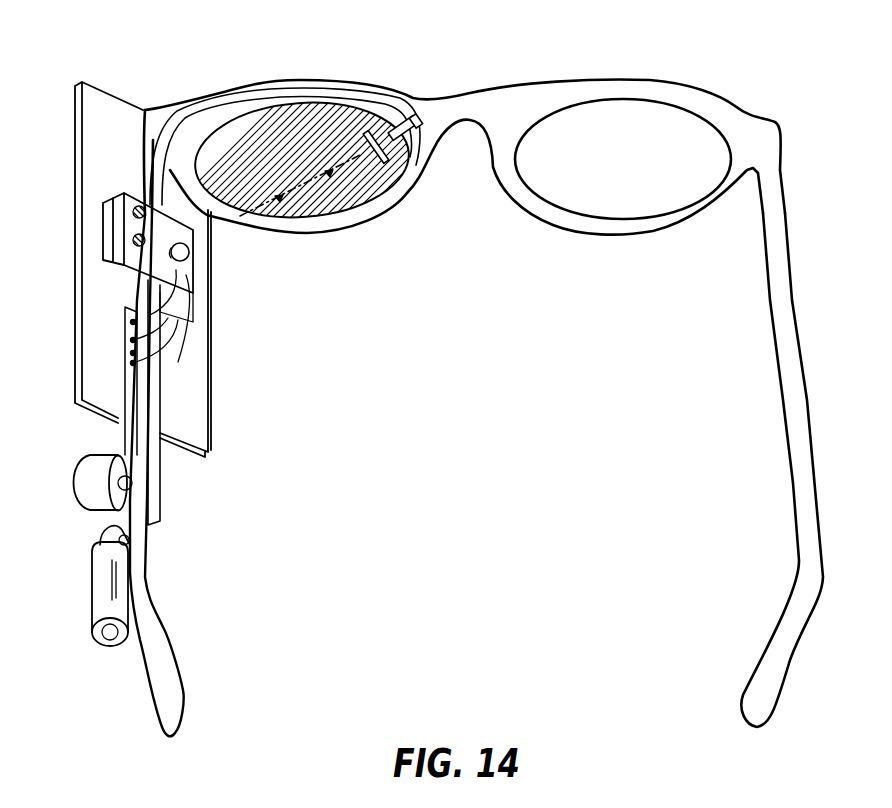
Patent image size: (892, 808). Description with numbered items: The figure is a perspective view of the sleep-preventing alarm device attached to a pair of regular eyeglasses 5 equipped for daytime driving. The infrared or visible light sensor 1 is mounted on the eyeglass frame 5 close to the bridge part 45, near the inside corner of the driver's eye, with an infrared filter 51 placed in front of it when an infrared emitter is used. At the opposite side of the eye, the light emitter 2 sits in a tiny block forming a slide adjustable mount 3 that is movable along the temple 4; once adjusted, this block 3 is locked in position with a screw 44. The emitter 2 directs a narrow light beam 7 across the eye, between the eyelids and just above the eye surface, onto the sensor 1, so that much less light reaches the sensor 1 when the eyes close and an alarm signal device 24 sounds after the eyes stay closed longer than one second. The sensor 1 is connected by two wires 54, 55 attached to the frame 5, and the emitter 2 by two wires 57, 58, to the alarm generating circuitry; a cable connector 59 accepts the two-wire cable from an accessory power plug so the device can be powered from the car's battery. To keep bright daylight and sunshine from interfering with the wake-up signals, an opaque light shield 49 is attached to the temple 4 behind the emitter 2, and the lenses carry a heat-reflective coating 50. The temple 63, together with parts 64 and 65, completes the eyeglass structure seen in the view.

The light sensor 1 is at (415, 140).
The light emitter 2 is at (178, 242).
The slide adjustable mount 3 is at (186, 278).
The temple 4 is at (152, 397).
The eyeglass frame 5 is at (272, 95).
The light beam 7 is at (240, 232).
The alarm signal device 24 is at (87, 471).
The screw 44 is at (137, 208).
The bridge part 45 is at (462, 98).
The opaque light shield 49 is at (95, 290).
The heat-reflective coating 50 is at (335, 205).
The infrared filter 51 is at (400, 165).
The sensor wire 54 is at (300, 90).
The sensor wire 55 is at (345, 100).
The emitter wire 57 is at (172, 318).
The emitter wire 58 is at (182, 368).
The cable connector 59 is at (100, 585).
The temple 63 is at (160, 655).
The connector 64 is at (130, 540).
The hinge connector 65 is at (113, 533).